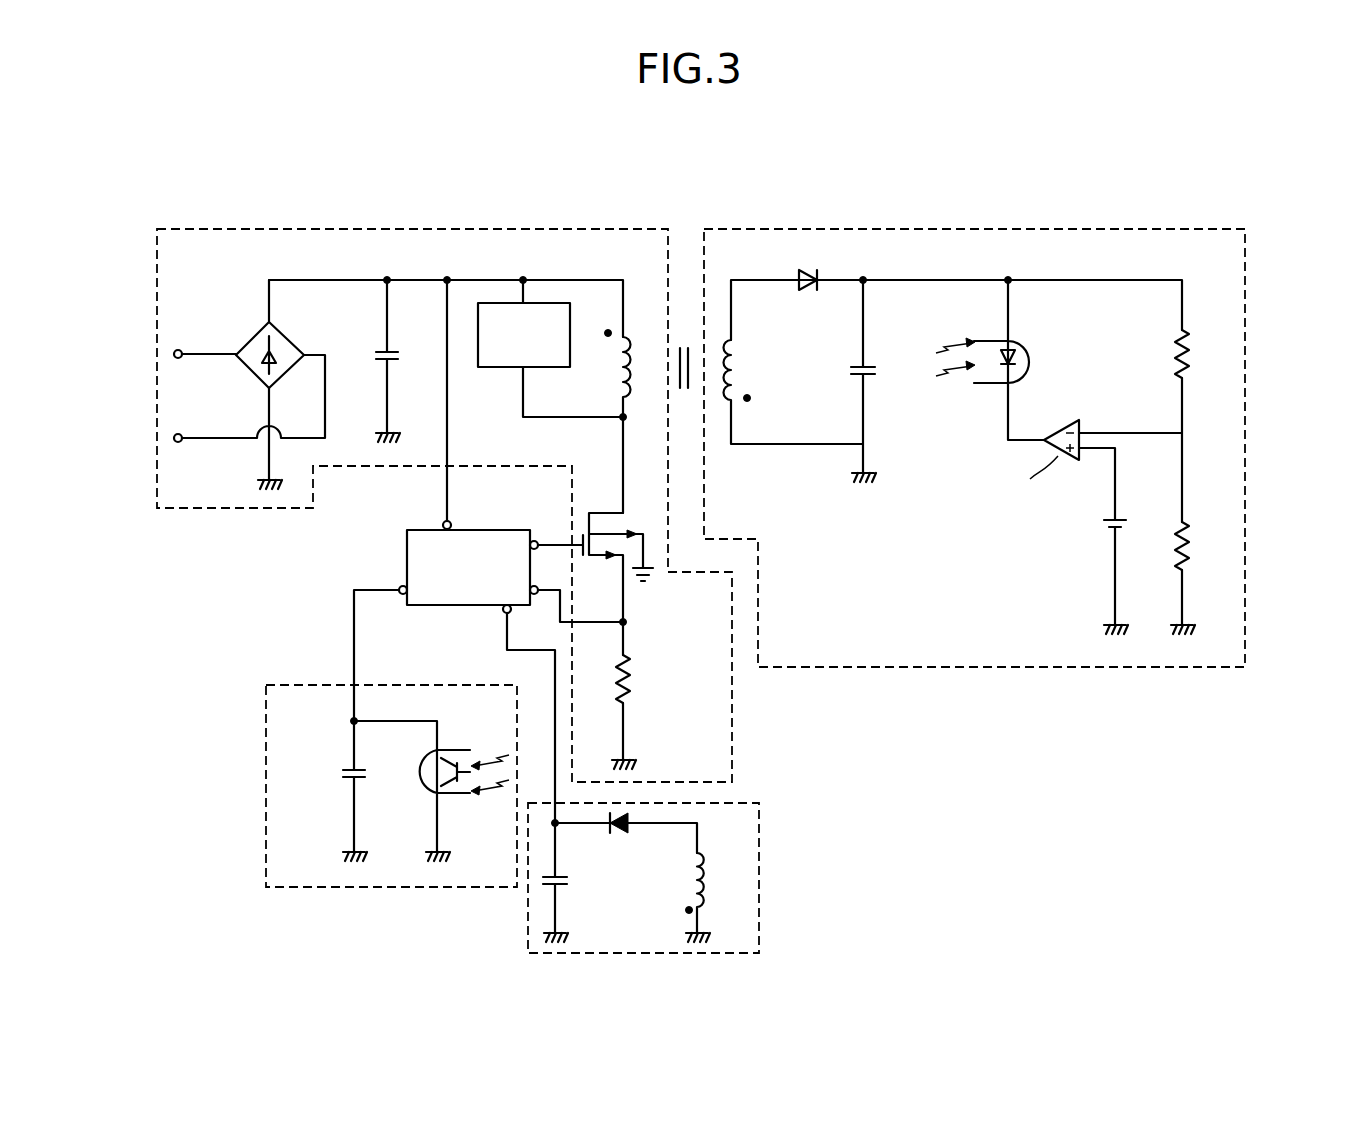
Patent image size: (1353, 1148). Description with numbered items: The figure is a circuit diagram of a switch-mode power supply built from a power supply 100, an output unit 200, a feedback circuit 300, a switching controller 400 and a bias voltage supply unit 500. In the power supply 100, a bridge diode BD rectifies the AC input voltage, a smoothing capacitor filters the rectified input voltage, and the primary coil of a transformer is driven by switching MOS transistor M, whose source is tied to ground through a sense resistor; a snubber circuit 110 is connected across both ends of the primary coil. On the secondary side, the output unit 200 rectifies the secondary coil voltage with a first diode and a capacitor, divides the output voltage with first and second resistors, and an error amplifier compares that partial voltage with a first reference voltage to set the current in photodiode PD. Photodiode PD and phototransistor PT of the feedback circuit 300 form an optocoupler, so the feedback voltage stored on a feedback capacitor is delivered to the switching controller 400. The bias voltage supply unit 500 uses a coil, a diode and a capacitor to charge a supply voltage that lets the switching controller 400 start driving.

The power supply 100 is at (379, 229).
The snubber circuit 110 is at (497, 303).
The output unit 200 is at (843, 229).
The feedback circuit 300 is at (266, 770).
The switching controller 400 is at (407, 558).
The bias voltage supply unit 500 is at (759, 838).